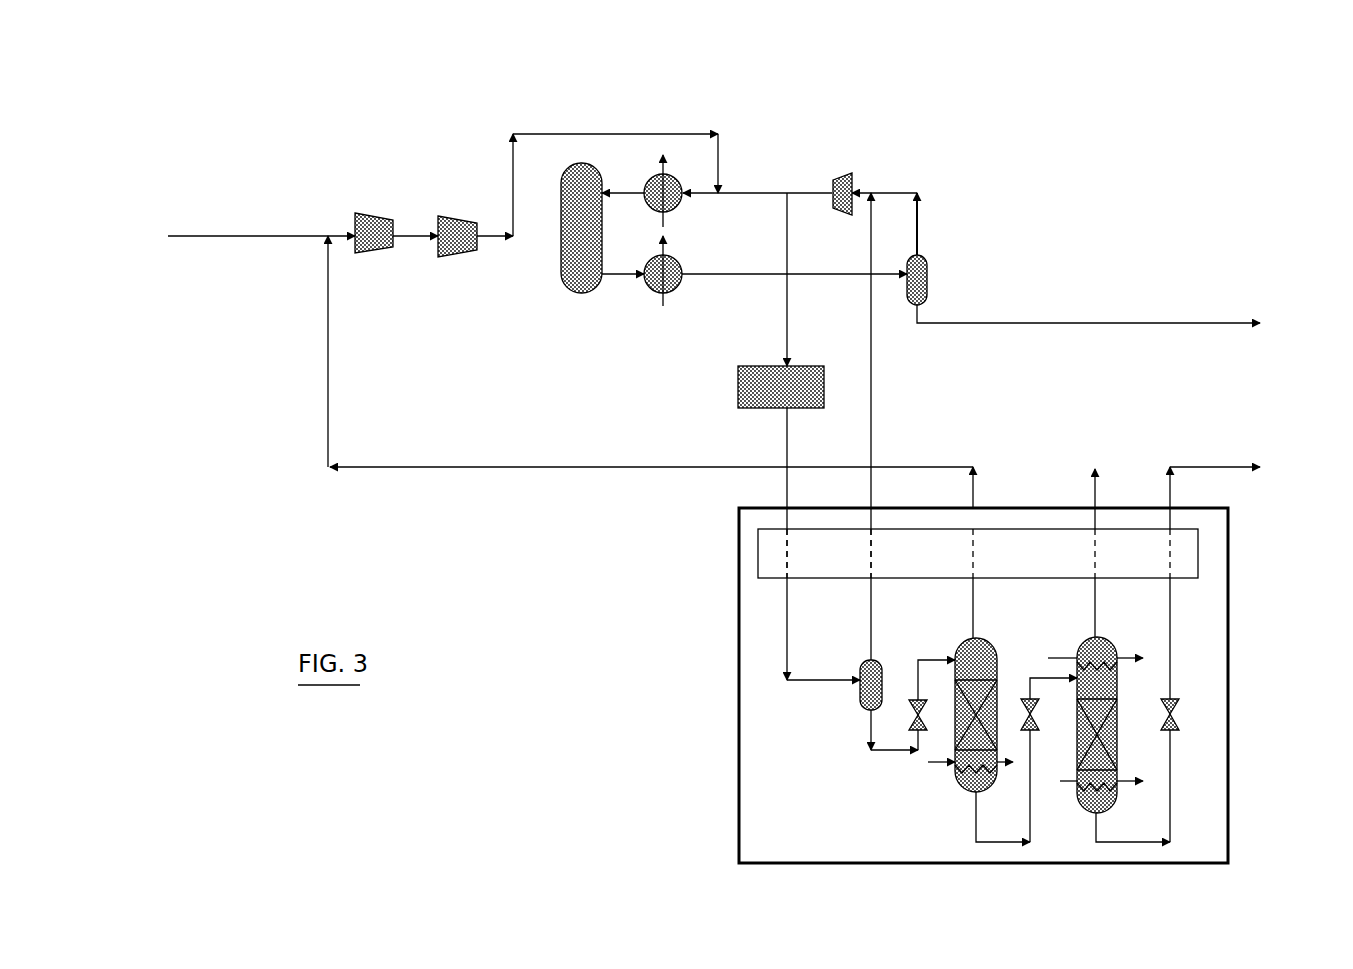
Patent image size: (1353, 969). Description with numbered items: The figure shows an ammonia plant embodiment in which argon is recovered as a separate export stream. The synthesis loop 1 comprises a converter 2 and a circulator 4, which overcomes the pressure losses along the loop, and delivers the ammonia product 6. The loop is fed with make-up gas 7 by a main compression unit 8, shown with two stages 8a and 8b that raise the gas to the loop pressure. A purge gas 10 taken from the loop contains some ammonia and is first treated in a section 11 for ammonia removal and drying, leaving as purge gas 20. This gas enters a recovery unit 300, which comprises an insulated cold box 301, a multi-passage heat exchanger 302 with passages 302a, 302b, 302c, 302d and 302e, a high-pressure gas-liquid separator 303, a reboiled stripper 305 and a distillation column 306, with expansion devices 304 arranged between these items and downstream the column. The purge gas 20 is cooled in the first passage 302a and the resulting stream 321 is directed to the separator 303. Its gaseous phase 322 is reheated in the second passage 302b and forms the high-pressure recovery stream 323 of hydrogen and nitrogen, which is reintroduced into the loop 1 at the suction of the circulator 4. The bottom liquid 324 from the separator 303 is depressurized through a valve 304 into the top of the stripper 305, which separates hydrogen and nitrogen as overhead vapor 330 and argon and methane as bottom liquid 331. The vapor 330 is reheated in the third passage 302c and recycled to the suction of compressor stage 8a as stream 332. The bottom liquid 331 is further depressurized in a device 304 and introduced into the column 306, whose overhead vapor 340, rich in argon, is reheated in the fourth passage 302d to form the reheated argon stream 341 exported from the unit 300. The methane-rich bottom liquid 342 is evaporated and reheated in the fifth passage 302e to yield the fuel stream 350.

The synthesis loop 1 is at (937, 126).
The converter 2 is at (578, 293).
The circulator 4 is at (838, 180).
The ammonia product 6 is at (1098, 320).
The make-up gas 7 is at (222, 236).
The main compression unit 8 is at (421, 209).
The first compression stage 8a is at (375, 213).
The second compression stage 8b is at (458, 250).
The purge gas 10 is at (787, 322).
The ammonia removal section 11 is at (738, 383).
The purge gas 20 is at (789, 440).
The recovery unit 300 is at (1002, 638).
The insulated cold box 301 is at (739, 795).
The multi-passage heat exchanger 302 is at (758, 575).
The first passage 302a is at (787, 552).
The second passage 302b is at (871, 552).
The third passage 302c is at (975, 552).
The fourth passage 302d is at (1096, 550).
The fifth passage 302e is at (1167, 570).
The high-pressure gas-liquid separator 303 is at (862, 706).
The expansion device 304 is at (918, 700).
The reboiled stripper 305 is at (965, 790).
The distillation column 306 is at (1086, 808).
The cooled purge gas stream 321 is at (788, 630).
The gaseous phase 322 is at (873, 616).
The high-pressure recovery stream 323 is at (873, 403).
The bottom liquid 324 is at (875, 753).
The overhead vapor 330 is at (975, 610).
The bottom liquid 331 is at (973, 830).
The recycle stream 332 is at (462, 476).
The overhead vapor 340 is at (1094, 600).
The reheated argon stream 341 is at (1092, 490).
The bottom liquid 342 is at (1130, 842).
The fuel stream 350 is at (1204, 462).